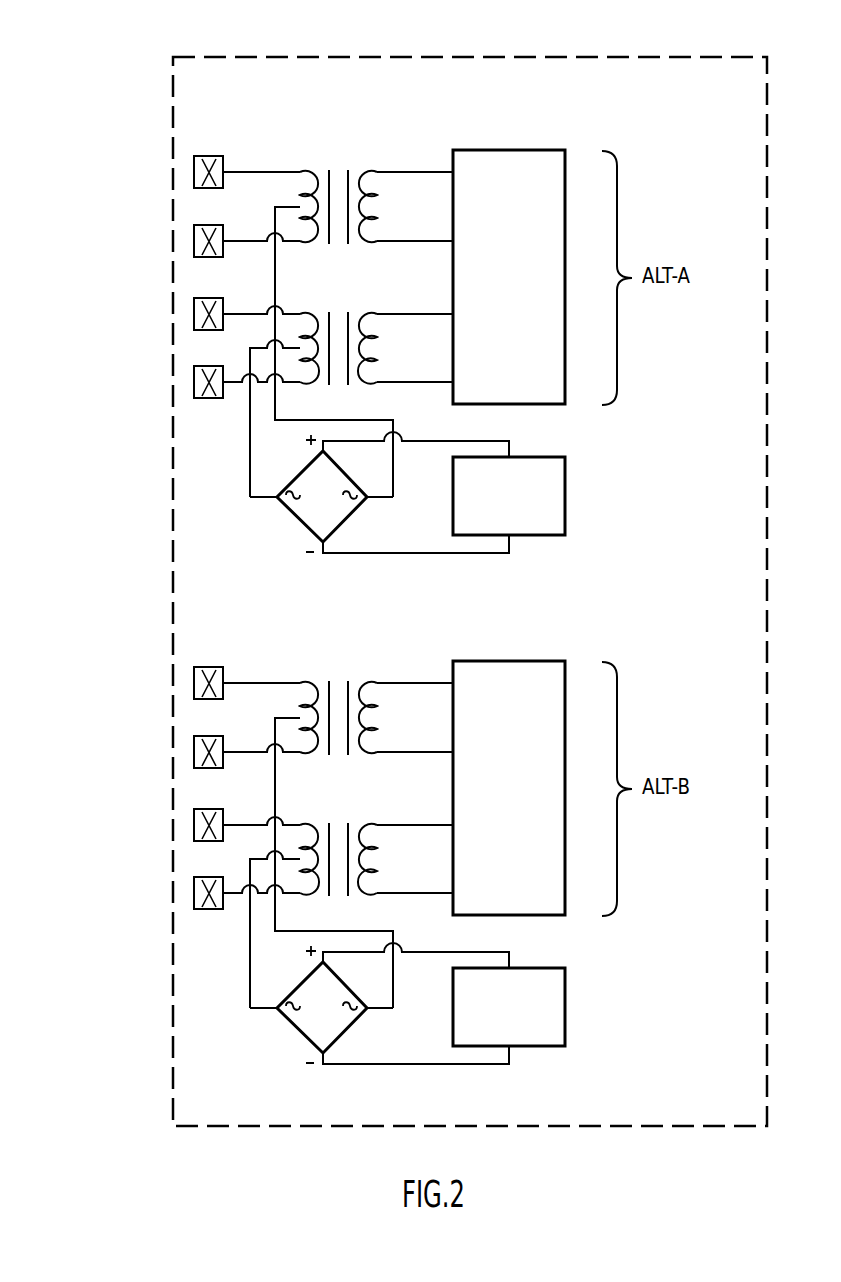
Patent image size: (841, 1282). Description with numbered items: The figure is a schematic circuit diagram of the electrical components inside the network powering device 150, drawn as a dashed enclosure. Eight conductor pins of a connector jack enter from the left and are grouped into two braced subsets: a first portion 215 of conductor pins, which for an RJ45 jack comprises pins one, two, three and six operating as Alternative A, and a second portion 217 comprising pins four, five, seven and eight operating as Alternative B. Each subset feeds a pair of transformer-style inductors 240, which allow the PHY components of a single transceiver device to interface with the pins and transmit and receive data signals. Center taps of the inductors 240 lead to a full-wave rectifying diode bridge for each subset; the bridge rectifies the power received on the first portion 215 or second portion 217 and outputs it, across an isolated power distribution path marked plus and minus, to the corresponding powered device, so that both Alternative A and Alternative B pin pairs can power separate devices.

The network powering device 150 is at (600, 57).
The first portion of conductor pins 215 is at (87, 133).
The second portion of conductor pins 217 is at (87, 644).
The inductors 240 is at (397, 150).